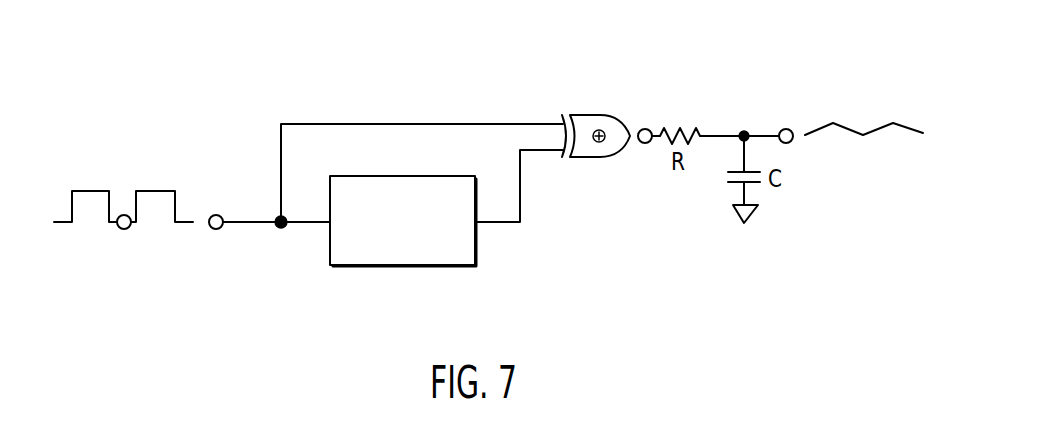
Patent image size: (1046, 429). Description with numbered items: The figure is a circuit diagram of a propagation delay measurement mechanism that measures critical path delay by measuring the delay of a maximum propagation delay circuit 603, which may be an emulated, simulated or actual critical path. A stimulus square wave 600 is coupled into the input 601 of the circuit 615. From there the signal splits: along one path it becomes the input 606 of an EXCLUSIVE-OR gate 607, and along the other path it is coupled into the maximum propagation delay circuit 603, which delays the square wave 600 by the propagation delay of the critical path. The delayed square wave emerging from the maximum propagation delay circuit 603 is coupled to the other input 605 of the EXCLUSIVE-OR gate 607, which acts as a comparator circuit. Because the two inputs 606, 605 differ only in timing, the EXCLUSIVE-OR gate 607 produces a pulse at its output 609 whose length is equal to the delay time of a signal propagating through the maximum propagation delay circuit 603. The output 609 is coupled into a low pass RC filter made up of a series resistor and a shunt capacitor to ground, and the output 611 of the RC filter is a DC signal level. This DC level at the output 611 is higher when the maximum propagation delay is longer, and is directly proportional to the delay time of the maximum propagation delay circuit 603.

The square wave 600 is at (120, 230).
The input 601 is at (212, 230).
The maximum propagation delay circuit 603 is at (405, 266).
The input of the EXCLUSIVE-OR gate 605 is at (547, 153).
The input of the EXCLUSIVE-OR gate 606 is at (557, 117).
The EXCLUSIVE-OR gate 607 is at (583, 117).
The output of the EXCLUSIVE-OR gate 609 is at (646, 128).
The output of the RC filter 611 is at (766, 131).
The circuit 615 is at (413, 116).